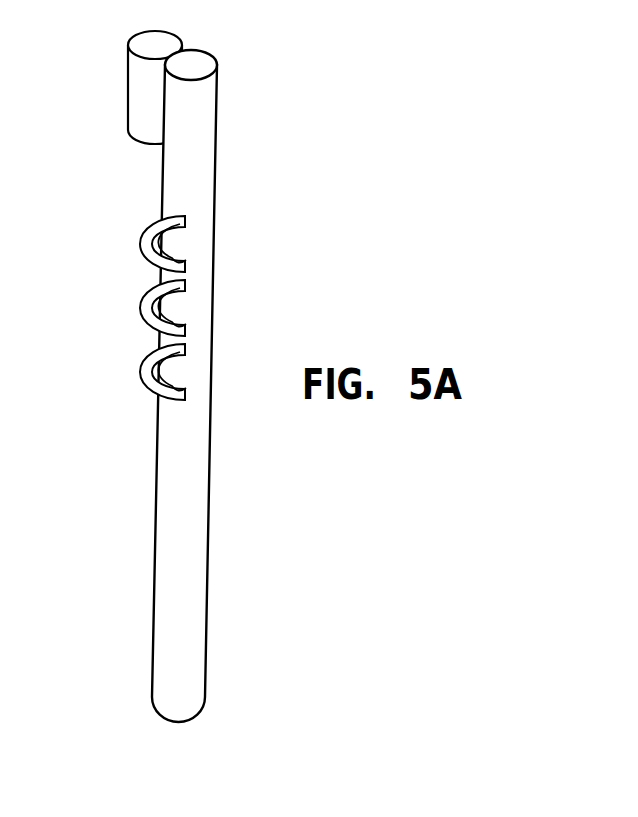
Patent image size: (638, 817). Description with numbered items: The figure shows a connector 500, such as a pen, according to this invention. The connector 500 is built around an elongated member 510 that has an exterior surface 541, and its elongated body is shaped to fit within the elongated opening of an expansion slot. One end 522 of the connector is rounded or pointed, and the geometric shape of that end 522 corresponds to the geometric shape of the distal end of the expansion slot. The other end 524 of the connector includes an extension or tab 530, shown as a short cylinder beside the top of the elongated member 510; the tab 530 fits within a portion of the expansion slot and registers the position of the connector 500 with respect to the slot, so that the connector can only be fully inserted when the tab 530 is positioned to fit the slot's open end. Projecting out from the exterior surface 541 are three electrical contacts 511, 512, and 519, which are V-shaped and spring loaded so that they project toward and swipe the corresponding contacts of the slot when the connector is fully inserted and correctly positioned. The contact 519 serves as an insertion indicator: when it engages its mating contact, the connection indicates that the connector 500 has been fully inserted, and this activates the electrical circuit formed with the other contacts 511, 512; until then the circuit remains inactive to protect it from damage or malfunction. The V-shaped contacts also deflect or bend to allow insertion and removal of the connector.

The connector 500 is at (296, 78).
The elongated member 510 is at (202, 382).
The electrical contact 511 is at (149, 238).
The electrical contact 512 is at (149, 322).
The electrical contact 519 is at (149, 360).
The end 522 is at (161, 712).
The end 524 is at (176, 48).
The extension or tab 530 is at (128, 88).
The exterior surface 541 is at (208, 528).